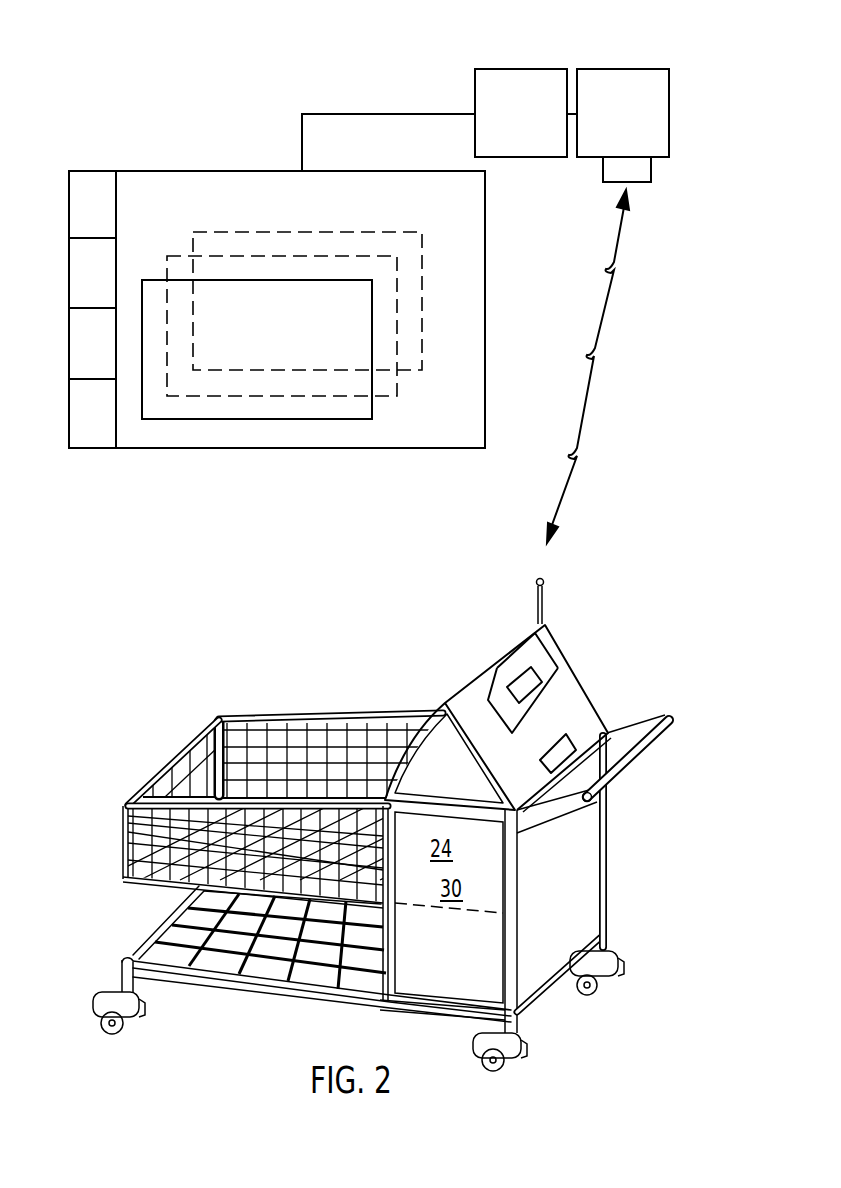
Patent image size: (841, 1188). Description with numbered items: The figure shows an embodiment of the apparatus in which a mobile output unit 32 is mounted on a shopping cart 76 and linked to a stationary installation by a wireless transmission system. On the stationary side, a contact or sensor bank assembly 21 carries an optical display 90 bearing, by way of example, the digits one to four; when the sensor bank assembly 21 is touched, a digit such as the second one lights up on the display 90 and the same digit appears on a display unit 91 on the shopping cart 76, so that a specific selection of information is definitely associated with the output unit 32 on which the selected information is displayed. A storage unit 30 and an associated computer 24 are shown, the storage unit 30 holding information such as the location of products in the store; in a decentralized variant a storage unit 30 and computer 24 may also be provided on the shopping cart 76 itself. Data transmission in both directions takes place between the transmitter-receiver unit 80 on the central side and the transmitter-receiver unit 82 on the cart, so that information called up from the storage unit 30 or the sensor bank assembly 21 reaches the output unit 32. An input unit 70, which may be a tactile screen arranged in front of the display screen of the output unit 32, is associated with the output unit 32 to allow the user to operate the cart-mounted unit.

The optical display 90 is at (135, 122).
The contact or sensor bank assembly 21 is at (180, 452).
The computer 24 is at (493, 48).
The storage unit 30 is at (588, 47).
The transmitter-receiver unit 80 is at (650, 163).
The transmitter-receiver unit 82 is at (544, 608).
The input unit 70 is at (532, 648).
The mobile output unit 32 is at (495, 713).
The display unit 91 is at (568, 743).
The shopping cart 76 is at (242, 988).